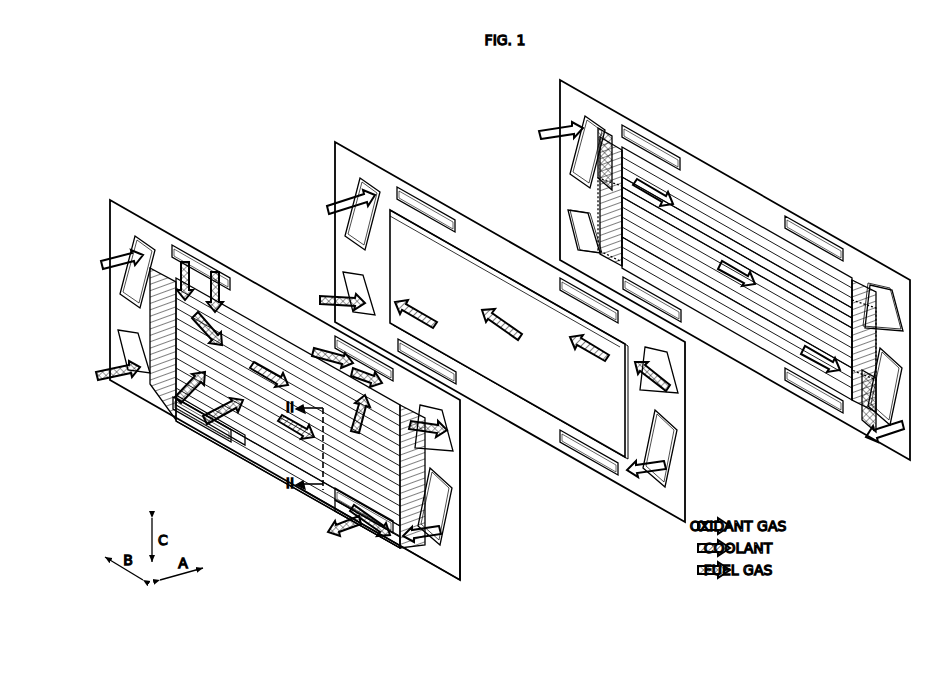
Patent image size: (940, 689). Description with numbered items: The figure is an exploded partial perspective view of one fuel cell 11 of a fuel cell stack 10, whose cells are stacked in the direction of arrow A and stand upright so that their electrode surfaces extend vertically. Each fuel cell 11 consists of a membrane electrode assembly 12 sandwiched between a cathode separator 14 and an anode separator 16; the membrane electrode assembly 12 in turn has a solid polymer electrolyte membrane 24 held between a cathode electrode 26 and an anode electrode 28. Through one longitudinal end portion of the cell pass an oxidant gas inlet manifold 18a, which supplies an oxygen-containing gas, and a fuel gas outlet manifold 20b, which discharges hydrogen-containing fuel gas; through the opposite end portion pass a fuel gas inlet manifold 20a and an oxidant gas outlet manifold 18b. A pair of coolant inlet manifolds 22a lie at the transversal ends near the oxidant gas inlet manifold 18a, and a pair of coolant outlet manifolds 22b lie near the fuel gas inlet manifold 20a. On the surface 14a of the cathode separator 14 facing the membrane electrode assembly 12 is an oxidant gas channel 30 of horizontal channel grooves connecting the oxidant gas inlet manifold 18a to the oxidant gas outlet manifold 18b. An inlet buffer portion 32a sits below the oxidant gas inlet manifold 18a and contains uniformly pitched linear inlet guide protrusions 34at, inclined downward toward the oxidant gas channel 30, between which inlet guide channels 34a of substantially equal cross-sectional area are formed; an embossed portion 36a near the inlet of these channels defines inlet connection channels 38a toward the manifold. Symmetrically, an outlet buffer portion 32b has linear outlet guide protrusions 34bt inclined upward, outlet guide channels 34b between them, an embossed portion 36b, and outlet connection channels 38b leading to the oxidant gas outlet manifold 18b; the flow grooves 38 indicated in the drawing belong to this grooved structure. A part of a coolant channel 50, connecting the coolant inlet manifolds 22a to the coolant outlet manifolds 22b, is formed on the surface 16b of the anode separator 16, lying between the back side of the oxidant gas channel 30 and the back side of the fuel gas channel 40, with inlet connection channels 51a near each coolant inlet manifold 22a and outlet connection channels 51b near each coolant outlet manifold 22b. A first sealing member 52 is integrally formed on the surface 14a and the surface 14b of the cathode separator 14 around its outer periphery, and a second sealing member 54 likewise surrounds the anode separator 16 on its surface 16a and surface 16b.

The fuel cell stack 10 is at (431, 66).
The fuel cell 11 is at (407, 66).
The membrane electrode assembly 12 is at (336, 140).
The cathode separator 14 is at (555, 85).
The surface of the cathode separator 14a is at (748, 202).
The surface of the cathode separator 14b is at (782, 204).
The anode separator 16 is at (110, 198).
The surface of the anode separator 16a is at (453, 560).
The surface of the anode separator 16b is at (447, 563).
The oxidant gas inlet manifold 18a is at (143, 252).
The oxidant gas outlet manifold 18b is at (442, 512).
The fuel gas inlet manifold 20a is at (454, 443).
The fuel gas outlet manifold 20b is at (130, 374).
The coolant inlet manifold 22a is at (222, 280).
The coolant outlet manifold 22b is at (331, 338).
The solid polymer electrolyte membrane 24 is at (515, 412).
The cathode electrode 26 is at (486, 248).
The anode electrode 28 is at (473, 230).
The oxidant gas channel 30 is at (700, 215).
The inlet buffer portion 32a is at (578, 232).
The outlet buffer portion 32b is at (878, 298).
The inlet guide channel 34a is at (623, 213).
The linear inlet guide protrusion 34at is at (626, 240).
The outlet guide channel 34b is at (852, 325).
The linear outlet guide protrusion 34bt is at (850, 303).
The embossed portion 36a is at (638, 145).
The embossed portion 36b is at (840, 407).
The flow grooves 38 is at (800, 243).
The inlet connection channel 38a is at (601, 133).
The outlet connection channel 38b is at (862, 422).
The fuel gas channel 40 is at (272, 434).
The coolant channel 50 is at (253, 322).
The inlet connection channel 51a is at (196, 264).
The outlet connection channel 51b is at (362, 370).
The first sealing member 52 is at (735, 212).
The second sealing member 54 is at (257, 442).